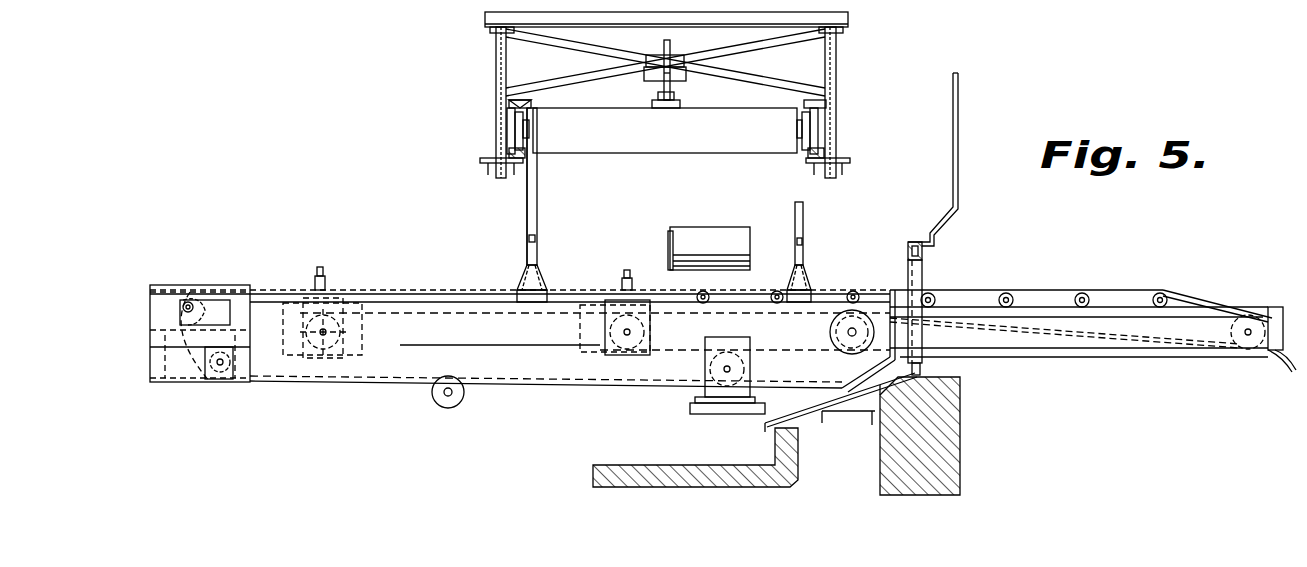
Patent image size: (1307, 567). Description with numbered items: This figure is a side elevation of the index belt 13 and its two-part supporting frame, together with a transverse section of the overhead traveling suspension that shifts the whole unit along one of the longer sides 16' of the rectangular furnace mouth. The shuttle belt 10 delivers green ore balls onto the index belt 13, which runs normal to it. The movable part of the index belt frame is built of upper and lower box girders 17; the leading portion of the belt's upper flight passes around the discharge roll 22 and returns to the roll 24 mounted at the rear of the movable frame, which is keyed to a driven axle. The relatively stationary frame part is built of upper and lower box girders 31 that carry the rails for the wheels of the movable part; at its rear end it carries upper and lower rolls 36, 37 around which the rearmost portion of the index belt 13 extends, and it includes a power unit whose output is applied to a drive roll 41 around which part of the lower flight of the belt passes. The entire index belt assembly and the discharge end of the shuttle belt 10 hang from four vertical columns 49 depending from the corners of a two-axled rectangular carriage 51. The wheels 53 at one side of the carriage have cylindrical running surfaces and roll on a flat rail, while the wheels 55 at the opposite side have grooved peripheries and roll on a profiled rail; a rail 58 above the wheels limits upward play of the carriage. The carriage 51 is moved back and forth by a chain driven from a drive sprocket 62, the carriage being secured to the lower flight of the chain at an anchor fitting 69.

The shuttle belt 10 is at (726, 214).
The index belt 13 is at (1046, 280).
The longer side of the furnace mouth 16' is at (803, 429).
The upper and lower box girders 17 is at (1065, 348).
The discharge roll 22 is at (1248, 316).
The roll 24 is at (343, 332).
The upper and lower box girders 31 is at (486, 278).
The upper roll 36 is at (192, 300).
The lower roll 37 is at (215, 382).
The drive roll 41 is at (735, 370).
The vertical columns 49 is at (537, 213).
The carriage 51 is at (618, 144).
The wheels 53 is at (798, 120).
The wheels 55 is at (507, 127).
The rail 58 is at (521, 100).
The drive sprocket 62 is at (670, 88).
The anchor fitting 69 is at (655, 98).